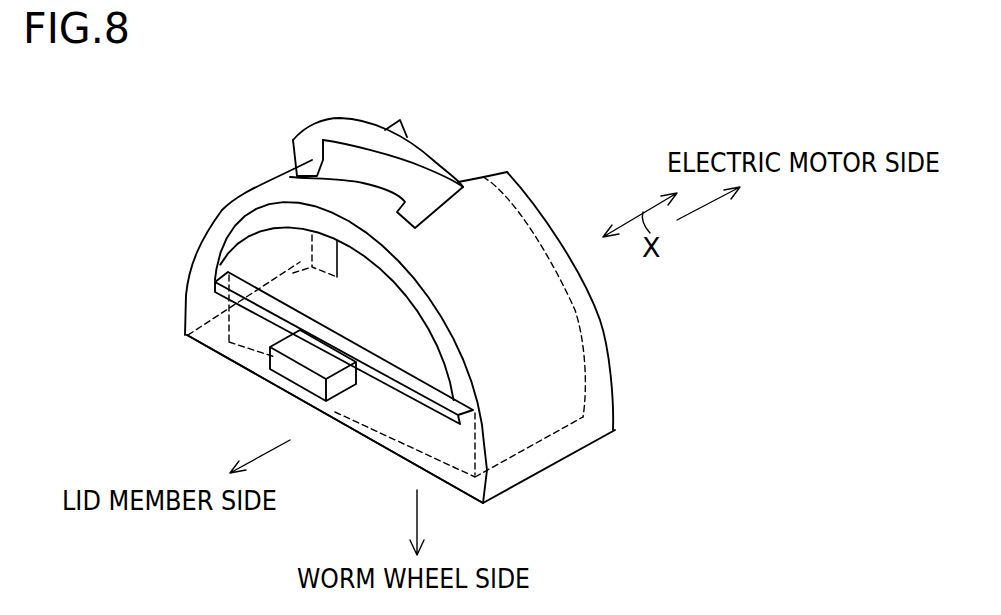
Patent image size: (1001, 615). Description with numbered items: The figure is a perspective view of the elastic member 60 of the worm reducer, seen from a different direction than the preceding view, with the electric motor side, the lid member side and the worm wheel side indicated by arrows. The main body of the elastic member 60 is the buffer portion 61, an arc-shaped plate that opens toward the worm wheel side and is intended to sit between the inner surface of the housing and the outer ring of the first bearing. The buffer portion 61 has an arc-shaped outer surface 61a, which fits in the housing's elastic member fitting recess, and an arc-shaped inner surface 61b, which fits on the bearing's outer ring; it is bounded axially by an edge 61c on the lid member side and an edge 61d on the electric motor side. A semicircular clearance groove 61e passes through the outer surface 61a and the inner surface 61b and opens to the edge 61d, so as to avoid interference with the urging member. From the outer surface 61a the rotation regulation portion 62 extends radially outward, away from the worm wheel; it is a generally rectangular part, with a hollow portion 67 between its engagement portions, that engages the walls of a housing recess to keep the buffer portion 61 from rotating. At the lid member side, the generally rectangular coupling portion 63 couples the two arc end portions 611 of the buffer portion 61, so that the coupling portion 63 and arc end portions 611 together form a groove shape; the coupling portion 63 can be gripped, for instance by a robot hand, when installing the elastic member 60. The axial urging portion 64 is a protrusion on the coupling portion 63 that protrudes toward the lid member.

The elastic member 60 is at (537, 171).
The buffer portion 61 is at (498, 244).
The outer surface 61a is at (527, 310).
The inner surface 61b is at (262, 244).
The edge on the lid member side 61c is at (450, 353).
The edge on the electric motor side 61d is at (610, 368).
The clearance groove 61e is at (490, 109).
The rotation regulation portion 62 is at (347, 133).
The coupling portion 63 is at (372, 408).
The axial urging portion 64 is at (292, 368).
The hollow portion 67 is at (300, 180).
The arc end portions 611 is at (273, 273).